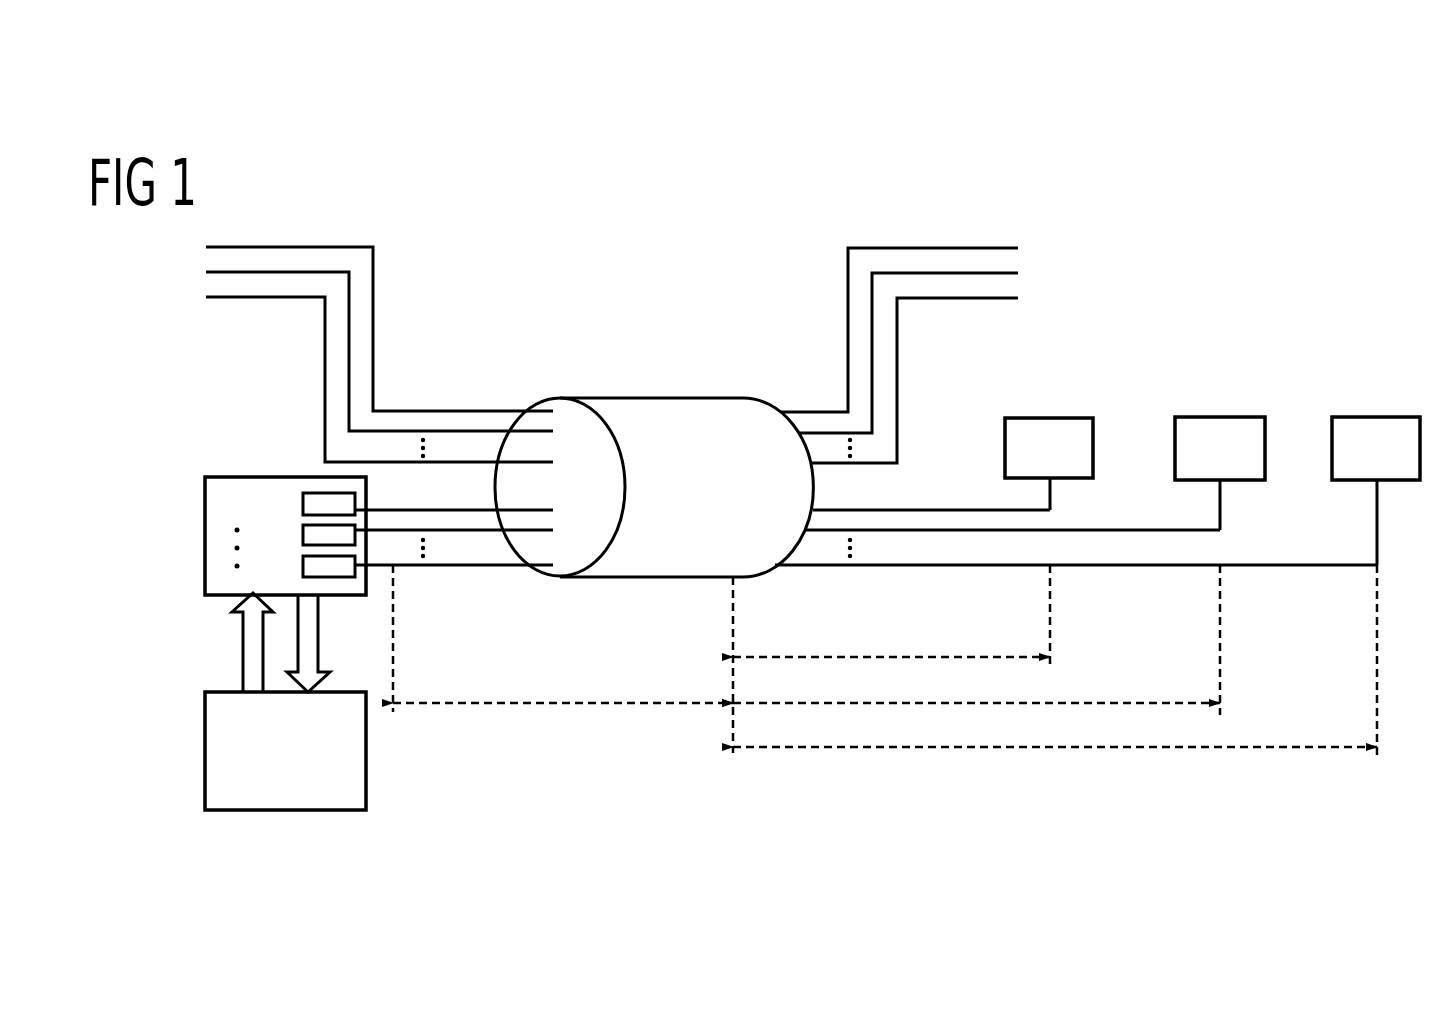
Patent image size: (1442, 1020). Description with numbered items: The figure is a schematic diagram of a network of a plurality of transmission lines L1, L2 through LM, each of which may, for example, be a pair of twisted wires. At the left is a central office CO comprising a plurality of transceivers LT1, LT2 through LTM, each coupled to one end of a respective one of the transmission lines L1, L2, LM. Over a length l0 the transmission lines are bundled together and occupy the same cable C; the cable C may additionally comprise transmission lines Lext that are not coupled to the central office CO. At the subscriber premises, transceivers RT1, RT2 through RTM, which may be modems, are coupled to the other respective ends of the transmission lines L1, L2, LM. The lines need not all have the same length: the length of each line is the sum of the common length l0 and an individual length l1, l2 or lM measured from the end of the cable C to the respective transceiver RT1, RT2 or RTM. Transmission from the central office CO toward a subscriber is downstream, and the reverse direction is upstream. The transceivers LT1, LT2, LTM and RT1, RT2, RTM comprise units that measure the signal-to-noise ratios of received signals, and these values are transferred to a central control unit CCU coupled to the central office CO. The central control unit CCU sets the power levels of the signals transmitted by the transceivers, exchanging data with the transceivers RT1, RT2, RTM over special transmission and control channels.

The central office CO is at (205, 530).
The central control unit CCU is at (205, 745).
The transceiver LT1 is at (313, 493).
The transceiver LT2 is at (303, 527).
The transceiver LTM is at (335, 578).
The cable C is at (660, 397).
The transmission lines Lext is at (1025, 237).
The transmission line L1 is at (946, 508).
The transmission line L2 is at (1128, 528).
The transmission line LM is at (1290, 568).
The transceiver RT1 is at (1049, 464).
The transceiver RT2 is at (1220, 473).
The transceiver RTM is at (1376, 491).
The length l0 is at (563, 698).
The length l1 is at (914, 654).
The length l2 is at (1129, 701).
The length lM is at (1043, 750).